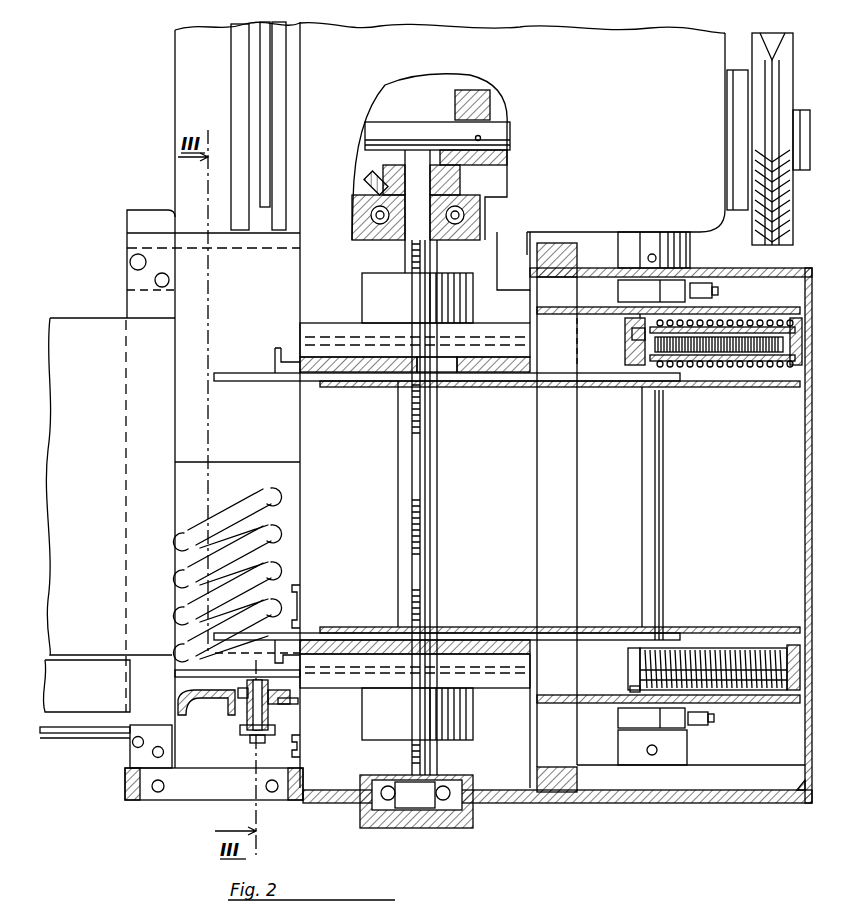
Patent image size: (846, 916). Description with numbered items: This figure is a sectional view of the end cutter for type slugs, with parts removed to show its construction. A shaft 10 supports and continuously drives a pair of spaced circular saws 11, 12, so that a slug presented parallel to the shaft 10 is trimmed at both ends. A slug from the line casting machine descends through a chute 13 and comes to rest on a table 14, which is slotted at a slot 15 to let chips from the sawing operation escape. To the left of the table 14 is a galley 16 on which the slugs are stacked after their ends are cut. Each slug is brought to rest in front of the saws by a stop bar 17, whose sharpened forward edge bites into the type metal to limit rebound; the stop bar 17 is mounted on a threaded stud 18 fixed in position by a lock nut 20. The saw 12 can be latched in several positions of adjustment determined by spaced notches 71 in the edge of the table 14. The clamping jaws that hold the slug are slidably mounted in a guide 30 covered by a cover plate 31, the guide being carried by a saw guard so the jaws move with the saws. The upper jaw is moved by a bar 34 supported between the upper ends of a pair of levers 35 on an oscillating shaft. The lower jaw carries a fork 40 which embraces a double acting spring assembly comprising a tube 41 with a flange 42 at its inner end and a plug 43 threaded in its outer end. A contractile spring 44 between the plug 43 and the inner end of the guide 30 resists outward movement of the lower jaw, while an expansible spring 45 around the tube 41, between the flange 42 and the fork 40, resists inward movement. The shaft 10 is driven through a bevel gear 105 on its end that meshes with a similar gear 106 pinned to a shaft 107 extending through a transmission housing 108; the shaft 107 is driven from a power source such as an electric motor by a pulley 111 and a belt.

The shaft 10 is at (432, 460).
The circular saw 11 is at (343, 340).
The circular saw 12 is at (497, 676).
The chute 13 is at (268, 85).
The table 14 is at (248, 490).
The slot 15 is at (268, 532).
The galley 16 is at (100, 496).
The stop bar 17 is at (212, 676).
The threaded stud 18 is at (256, 738).
The lock nut 20 is at (290, 690).
The guide 30 is at (487, 372).
The cover plate 31 is at (512, 387).
The bar 34 is at (662, 497).
The lever 35 is at (625, 718).
The fork 40 is at (635, 322).
The tube 41 is at (733, 368).
The flange 42 is at (795, 386).
The plug 43 is at (628, 345).
The contractile spring 44 is at (700, 352).
The expansible spring 45 is at (720, 372).
The notch 71 is at (300, 605).
The bevel gear 105 is at (375, 182).
The bevel gear 106 is at (452, 95).
The shaft 107 is at (428, 135).
The transmission housing 108 is at (630, 112).
The pulley 111 is at (752, 236).